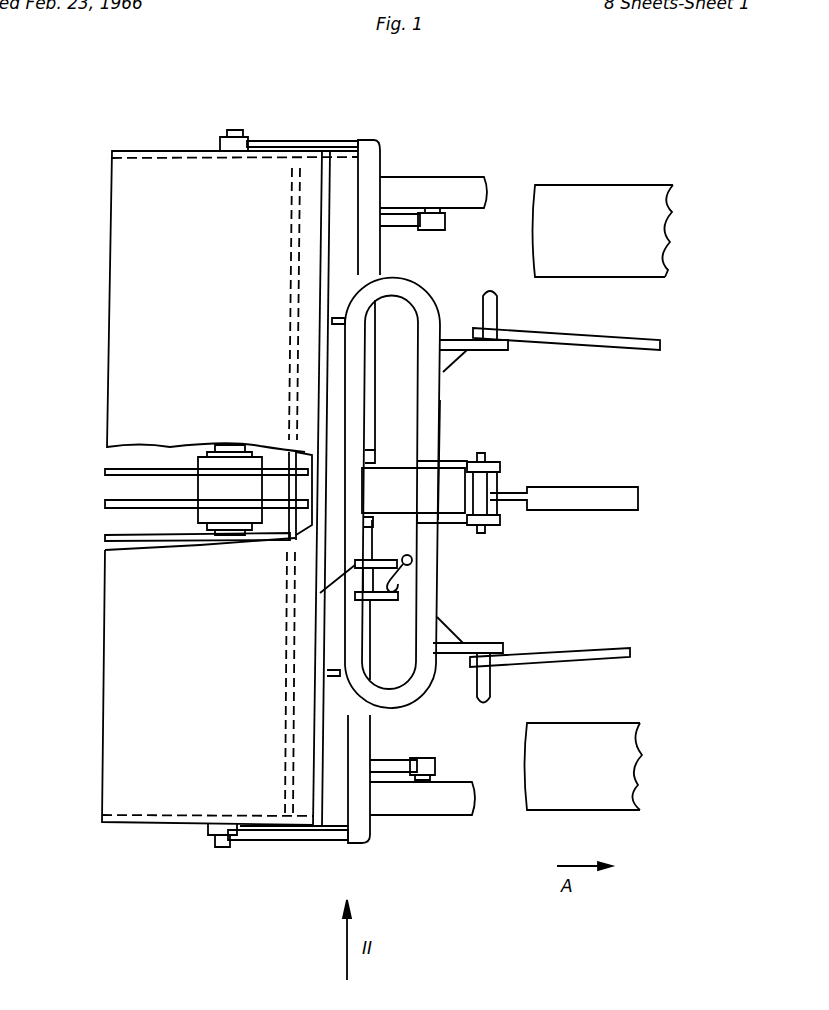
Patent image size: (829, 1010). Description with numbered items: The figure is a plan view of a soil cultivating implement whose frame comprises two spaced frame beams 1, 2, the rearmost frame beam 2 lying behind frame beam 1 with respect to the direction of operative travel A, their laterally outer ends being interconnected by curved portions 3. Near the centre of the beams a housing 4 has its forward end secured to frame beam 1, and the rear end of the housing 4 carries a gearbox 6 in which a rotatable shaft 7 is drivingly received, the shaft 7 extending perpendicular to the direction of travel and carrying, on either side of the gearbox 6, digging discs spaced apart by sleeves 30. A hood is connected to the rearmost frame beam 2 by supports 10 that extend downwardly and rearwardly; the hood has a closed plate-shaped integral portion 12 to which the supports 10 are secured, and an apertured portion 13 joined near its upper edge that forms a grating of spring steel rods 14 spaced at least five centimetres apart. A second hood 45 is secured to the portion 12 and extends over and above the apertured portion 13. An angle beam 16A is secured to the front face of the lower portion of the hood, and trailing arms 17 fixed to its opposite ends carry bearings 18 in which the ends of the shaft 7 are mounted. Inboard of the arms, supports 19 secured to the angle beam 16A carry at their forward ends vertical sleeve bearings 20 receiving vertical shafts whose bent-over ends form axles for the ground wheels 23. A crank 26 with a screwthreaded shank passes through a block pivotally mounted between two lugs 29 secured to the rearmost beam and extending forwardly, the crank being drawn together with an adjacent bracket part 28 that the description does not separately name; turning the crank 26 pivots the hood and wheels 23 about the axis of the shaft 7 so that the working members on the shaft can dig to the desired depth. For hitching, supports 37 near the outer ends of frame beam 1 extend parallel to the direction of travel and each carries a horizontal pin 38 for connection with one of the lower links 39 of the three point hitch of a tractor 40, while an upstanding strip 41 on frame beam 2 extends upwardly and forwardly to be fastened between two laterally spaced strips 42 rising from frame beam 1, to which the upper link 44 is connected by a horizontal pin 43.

The frame beam 1 is at (440, 422).
The frame beam 2 is at (366, 392).
The curved portion 3 is at (418, 295).
The housing 4 is at (280, 540).
The gearbox 6 is at (200, 482).
The rotatable shaft 7 is at (222, 848).
The support 10 is at (336, 314).
The closed plate-shaped integral portion 12 is at (330, 838).
The apertured portion 13 is at (105, 472).
The rod 14 is at (108, 534).
The angle beam 16A is at (368, 835).
The trailing arm 17 is at (298, 143).
The bearing 18 is at (220, 140).
The support 19 is at (394, 226).
The vertical sleeve bearing 20 is at (445, 225).
The ground wheel 23 is at (458, 178).
The crank 26 is at (400, 570).
The bracket 28 is at (386, 602).
The lug 29 is at (320, 593).
The sleeve 30 is at (232, 445).
The support 37 is at (500, 355).
The horizontal pin 38 is at (497, 310).
The lower link 39 is at (612, 345).
The tractor 40 is at (628, 280).
The upstanding strip 41 is at (398, 472).
The laterally spaced strip 42 is at (500, 466).
The horizontal pin 43 is at (485, 452).
The upper link 44 is at (592, 492).
The second hood 45 is at (105, 578).